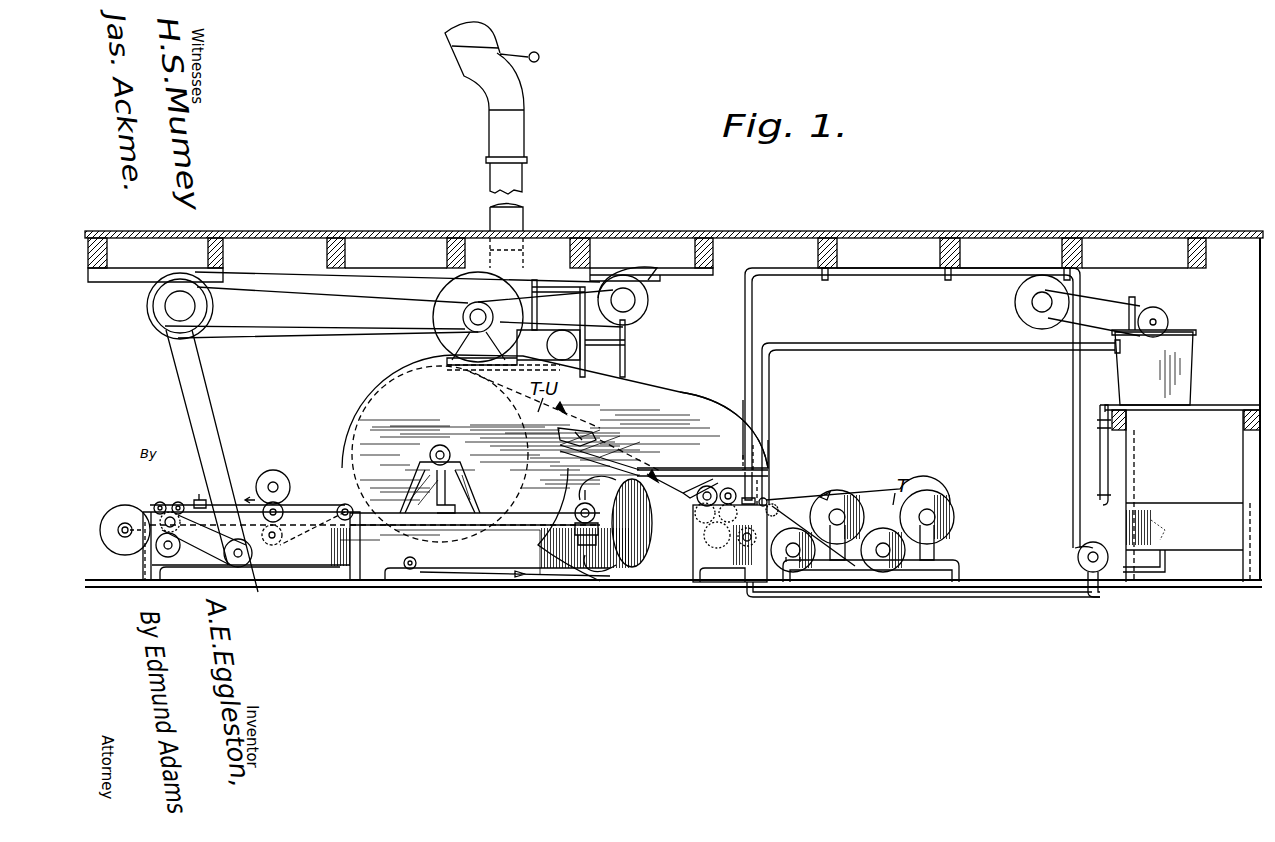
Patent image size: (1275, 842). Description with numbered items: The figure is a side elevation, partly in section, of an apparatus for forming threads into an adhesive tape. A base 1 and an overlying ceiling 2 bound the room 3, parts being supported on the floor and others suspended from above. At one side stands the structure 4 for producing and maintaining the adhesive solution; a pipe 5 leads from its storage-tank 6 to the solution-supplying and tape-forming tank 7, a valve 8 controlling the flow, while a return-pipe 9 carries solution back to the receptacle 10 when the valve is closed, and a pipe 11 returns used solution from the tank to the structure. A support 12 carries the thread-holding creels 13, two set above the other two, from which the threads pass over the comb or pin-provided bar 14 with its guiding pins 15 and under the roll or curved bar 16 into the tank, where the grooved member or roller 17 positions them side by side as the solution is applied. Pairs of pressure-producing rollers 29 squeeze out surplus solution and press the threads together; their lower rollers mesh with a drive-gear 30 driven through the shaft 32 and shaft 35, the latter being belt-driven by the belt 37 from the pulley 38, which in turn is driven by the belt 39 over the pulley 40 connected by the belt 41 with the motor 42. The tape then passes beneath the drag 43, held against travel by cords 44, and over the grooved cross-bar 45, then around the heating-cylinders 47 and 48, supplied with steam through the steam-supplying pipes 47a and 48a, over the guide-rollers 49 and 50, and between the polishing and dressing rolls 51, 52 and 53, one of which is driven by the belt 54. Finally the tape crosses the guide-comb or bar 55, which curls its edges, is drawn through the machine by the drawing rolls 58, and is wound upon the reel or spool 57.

The base 1 is at (1190, 590).
The ceiling 2 is at (1018, 233).
The room 3 is at (860, 430).
The structure 4 is at (1182, 480).
The pipe 5 is at (750, 340).
The storage-tank 6 is at (1153, 527).
The solution-supplying and tape-forming tank 7 is at (724, 575).
The valve 8 is at (760, 482).
The return-pipe 9 is at (878, 346).
The receptacle 10 is at (1185, 380).
The pipe 11 is at (890, 600).
The support 12 is at (960, 566).
The thread-holding creels 13 is at (848, 520).
The comb or pin-provided bar 14 is at (785, 498).
The pins 15 is at (773, 517).
The roll or curved bar 16 is at (773, 489).
The grooved member or roller 17 is at (758, 592).
The pressure-producing rollers 29 is at (705, 505).
The drive-gear 30 is at (710, 540).
The shaft 32 is at (520, 545).
The shaft 35 is at (168, 514).
The belt 37 is at (178, 548).
The pulley 38 is at (250, 565).
The belt 39 is at (182, 374).
The pulley 40 is at (165, 307).
The belt 41 is at (272, 330).
The motor 42 is at (465, 322).
The drag 43 is at (700, 470).
The cords 44 is at (712, 458).
The cross-bar 45 is at (595, 435).
The heating-cylinder 47 is at (368, 416).
The steam-supplying pipe 47a is at (418, 466).
The heating-cylinder 48 is at (600, 480).
The steam-supplying pipe 48a is at (592, 504).
The guide-roller 49 is at (410, 570).
The guide-roller 50 is at (343, 506).
The polishing and dressing roll 51 is at (285, 538).
The polishing and dressing roll 52 is at (284, 510).
The polishing and dressing roll 53 is at (288, 478).
The belt 54 is at (235, 500).
The guide-comb or bar 55 is at (200, 500).
The reel or spool 57 is at (125, 506).
The drawing rolls 58 is at (160, 503).